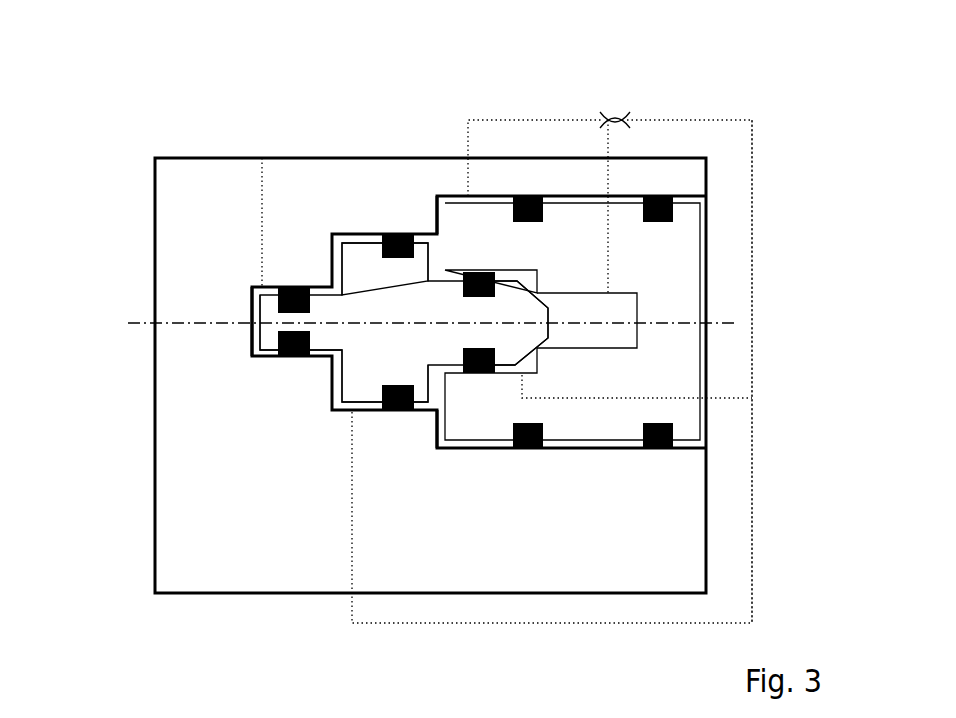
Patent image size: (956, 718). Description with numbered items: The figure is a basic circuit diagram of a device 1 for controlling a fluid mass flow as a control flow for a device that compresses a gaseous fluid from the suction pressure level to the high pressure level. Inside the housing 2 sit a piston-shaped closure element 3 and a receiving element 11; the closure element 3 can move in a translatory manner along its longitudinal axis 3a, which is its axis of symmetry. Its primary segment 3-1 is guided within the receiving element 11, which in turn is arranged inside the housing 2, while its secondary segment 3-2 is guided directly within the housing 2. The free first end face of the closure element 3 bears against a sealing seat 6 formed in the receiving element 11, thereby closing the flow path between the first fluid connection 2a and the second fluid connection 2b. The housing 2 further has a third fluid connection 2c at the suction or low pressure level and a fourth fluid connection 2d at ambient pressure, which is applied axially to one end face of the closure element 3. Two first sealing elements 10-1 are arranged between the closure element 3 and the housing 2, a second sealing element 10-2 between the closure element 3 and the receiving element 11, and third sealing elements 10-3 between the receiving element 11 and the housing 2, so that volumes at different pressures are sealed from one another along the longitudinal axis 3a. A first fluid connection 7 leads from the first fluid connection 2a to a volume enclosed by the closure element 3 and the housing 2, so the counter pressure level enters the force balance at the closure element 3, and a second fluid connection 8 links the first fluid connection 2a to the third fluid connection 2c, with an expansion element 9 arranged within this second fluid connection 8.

The device 1 is at (810, 112).
The housing 2 is at (202, 470).
The first fluid connection 2a is at (333, 233).
The second fluid connection 2b is at (622, 338).
The third fluid connection 2c is at (433, 234).
The fourth fluid connection 2d is at (254, 287).
The closure element 3 is at (265, 333).
The primary segment 3-1 is at (516, 338).
The secondary segment 3-2 is at (358, 373).
The longitudinal axis 3a is at (130, 323).
The sealing seat 6 is at (537, 293).
The first fluid connection 7 is at (518, 623).
The second fluid connection 8 is at (752, 190).
The expansion element 9 is at (617, 113).
The first sealing elements 10-1 is at (389, 232).
The second sealing element 10-2 is at (472, 272).
The third sealing elements 10-3 is at (528, 196).
The receiving element 11 is at (689, 414).